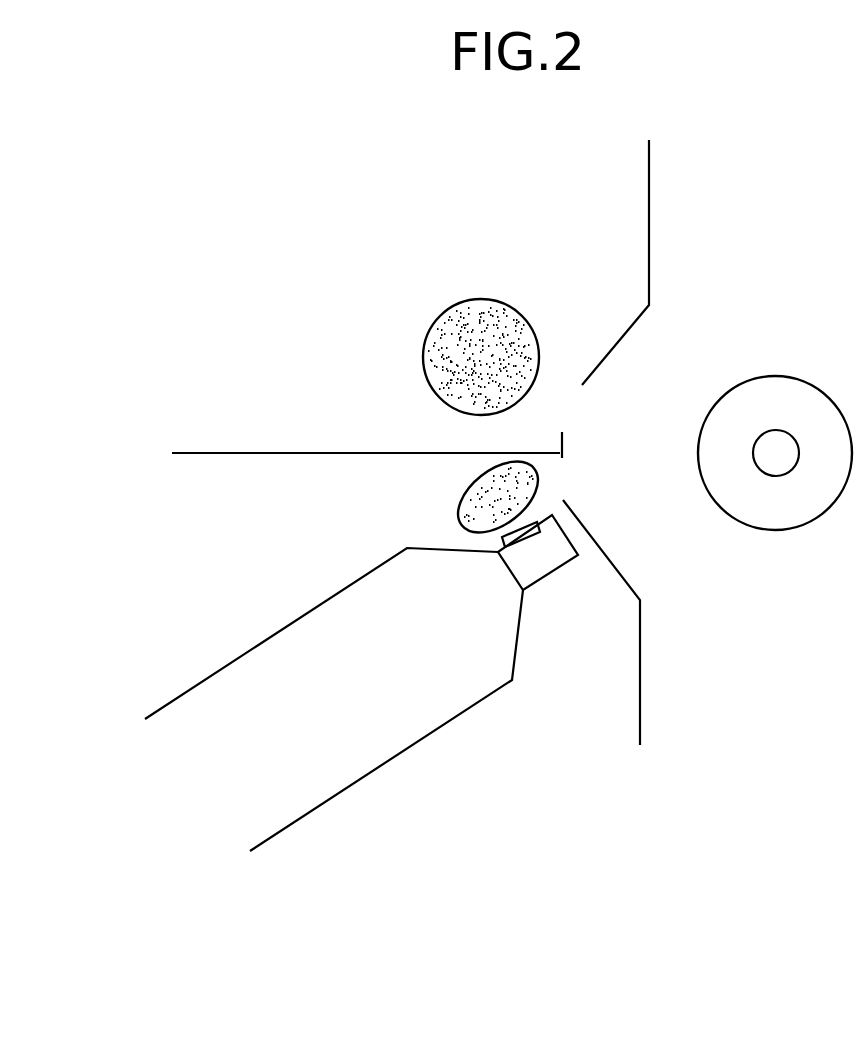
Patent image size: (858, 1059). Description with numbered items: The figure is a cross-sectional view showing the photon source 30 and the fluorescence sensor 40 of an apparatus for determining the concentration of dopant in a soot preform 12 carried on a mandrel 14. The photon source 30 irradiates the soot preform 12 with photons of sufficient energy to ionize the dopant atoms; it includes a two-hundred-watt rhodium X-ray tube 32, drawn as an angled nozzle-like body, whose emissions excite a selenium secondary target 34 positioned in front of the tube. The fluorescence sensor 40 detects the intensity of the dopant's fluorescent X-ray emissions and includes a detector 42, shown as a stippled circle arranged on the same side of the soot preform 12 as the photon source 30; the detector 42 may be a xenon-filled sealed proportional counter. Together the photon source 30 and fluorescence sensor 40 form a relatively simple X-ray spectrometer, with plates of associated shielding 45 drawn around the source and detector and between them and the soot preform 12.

The soot preform 12 is at (698, 424).
The mandrel 14 is at (781, 431).
The photon source 30 is at (228, 537).
The rhodium X-ray tube 32 is at (455, 718).
The selenium secondary target 34 is at (470, 483).
The fluorescence sensor 40 is at (350, 296).
The detector 42 is at (443, 306).
The shielding 45 is at (650, 160).